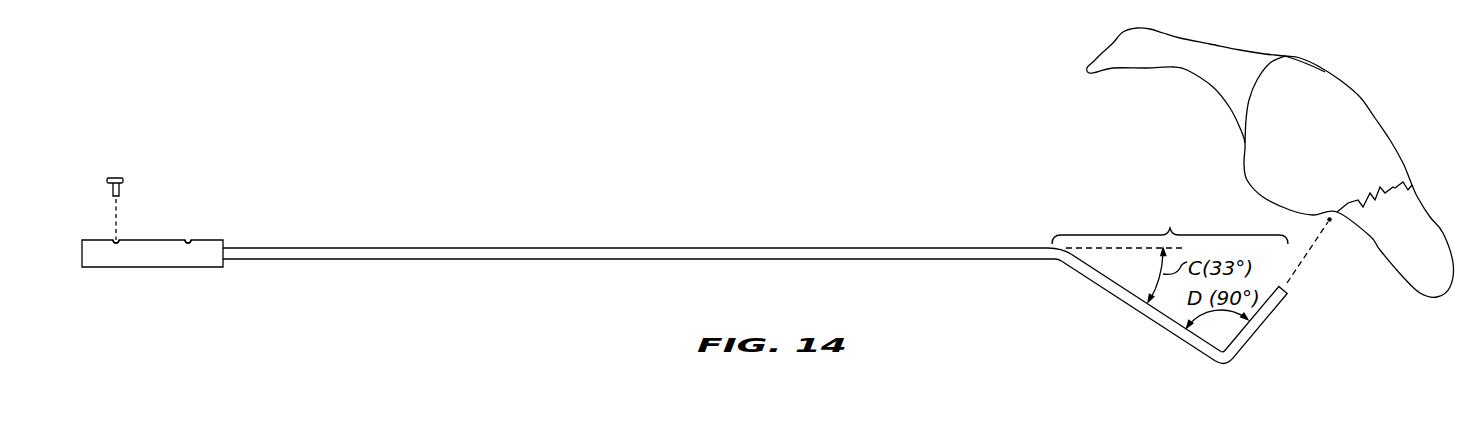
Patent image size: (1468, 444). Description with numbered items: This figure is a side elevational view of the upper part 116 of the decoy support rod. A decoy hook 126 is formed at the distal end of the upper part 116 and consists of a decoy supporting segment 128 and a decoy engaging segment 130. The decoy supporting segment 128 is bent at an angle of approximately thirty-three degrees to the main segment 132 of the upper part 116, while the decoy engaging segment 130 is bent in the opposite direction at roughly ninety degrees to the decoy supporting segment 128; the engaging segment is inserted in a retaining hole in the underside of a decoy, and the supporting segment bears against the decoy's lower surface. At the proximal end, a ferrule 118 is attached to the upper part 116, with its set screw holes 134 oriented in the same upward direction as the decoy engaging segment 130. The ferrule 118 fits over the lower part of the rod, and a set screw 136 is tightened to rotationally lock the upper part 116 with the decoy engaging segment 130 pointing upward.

The upper part 116 is at (707, 257).
The ferrule 118 is at (212, 240).
The decoy hook 126 is at (1170, 224).
The decoy supporting segment 128 is at (1119, 298).
The decoy engaging segment 130 is at (1271, 313).
The main segment 132 is at (540, 259).
The set screw holes 134 is at (118, 240).
The set screw 136 is at (124, 183).